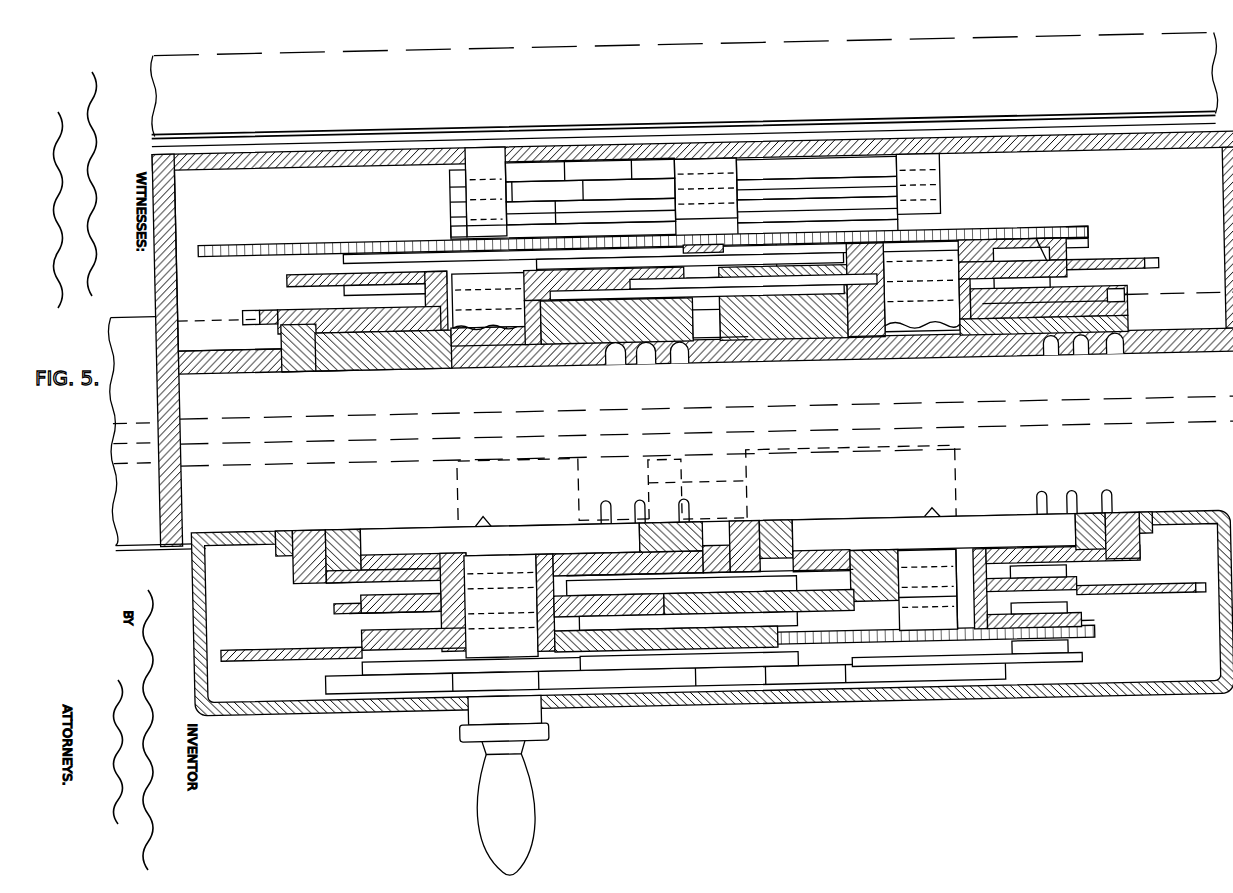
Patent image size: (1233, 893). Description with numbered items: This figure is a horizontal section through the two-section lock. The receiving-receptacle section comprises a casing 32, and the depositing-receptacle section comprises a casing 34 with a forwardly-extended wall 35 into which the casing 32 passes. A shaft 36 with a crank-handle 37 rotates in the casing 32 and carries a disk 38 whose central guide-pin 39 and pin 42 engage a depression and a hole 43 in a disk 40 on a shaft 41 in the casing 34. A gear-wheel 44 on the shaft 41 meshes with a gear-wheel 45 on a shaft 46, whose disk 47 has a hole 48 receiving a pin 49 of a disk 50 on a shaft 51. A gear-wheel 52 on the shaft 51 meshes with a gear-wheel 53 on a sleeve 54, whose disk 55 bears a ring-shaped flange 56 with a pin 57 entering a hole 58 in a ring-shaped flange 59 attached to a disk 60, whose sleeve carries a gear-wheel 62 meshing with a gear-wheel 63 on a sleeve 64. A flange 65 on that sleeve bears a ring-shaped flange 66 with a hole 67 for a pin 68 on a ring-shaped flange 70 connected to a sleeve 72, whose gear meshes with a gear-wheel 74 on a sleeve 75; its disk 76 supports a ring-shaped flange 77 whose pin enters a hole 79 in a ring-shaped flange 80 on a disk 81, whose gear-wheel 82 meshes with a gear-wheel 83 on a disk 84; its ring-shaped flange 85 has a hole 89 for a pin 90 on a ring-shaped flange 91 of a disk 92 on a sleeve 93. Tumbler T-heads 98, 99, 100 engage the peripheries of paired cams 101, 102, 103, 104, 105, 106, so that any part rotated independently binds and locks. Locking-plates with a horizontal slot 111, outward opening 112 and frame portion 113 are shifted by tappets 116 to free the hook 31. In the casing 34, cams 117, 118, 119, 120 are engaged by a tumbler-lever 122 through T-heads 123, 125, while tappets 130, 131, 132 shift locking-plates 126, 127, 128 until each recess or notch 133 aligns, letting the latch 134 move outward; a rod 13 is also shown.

The rod 13 is at (1174, 603).
The hook 31 is at (745, 502).
The casing 32 is at (369, 705).
The casing 34 is at (180, 195).
The forwardly-extended wall 35 is at (158, 480).
The shaft 36 is at (501, 606).
The crank-handle 37 is at (513, 769).
The disk 38 is at (544, 522).
The guide-pin 39 is at (480, 513).
The disk 40 is at (529, 363).
The shaft 41 is at (488, 238).
The pin 42 is at (605, 506).
The hole 43 is at (619, 363).
The gear-wheel 44 is at (360, 235).
The gear-wheel 45 is at (1082, 235).
The shaft 46 is at (920, 242).
The disk 47 is at (1002, 363).
The hole 48 is at (1052, 363).
The pin 49 is at (1038, 504).
The disk 50 is at (986, 531).
The shaft 51 is at (928, 588).
The gear-wheel 52 is at (1091, 643).
The gear-wheel 53 is at (278, 640).
The sleeve 54 is at (461, 565).
The disk 55 is at (403, 548).
The ring-shaped flange 56 is at (338, 528).
The pin 57 is at (640, 505).
The hole 58 is at (655, 363).
The ring-shaped flange 59 is at (348, 363).
The disk 60 is at (423, 363).
The gear-wheel 62 is at (290, 272).
The gear-wheel 63 is at (1154, 267).
The sleeve 64 is at (962, 314).
The flange 65 is at (851, 363).
The ring-shaped flange 66 is at (760, 363).
The hole 67 is at (1097, 374).
The pin 68 is at (1076, 501).
The ring-shaped flange 70 is at (757, 525).
The sleeve 72 is at (896, 602).
The gear-wheel 74 is at (338, 613).
The sleeve 75 is at (357, 630).
The disk 76 is at (343, 575).
The ring-shaped flange 77 is at (306, 528).
The hole 79 is at (690, 363).
The ring-shaped flange 80 is at (308, 363).
The disk 81 is at (393, 363).
The gear-wheel 82 is at (250, 301).
The gear-wheel 83 is at (1129, 303).
The disk 84 is at (1094, 303).
The ring-shaped flange 85 is at (730, 363).
The hole 89 is at (1120, 363).
The pin 90 is at (1113, 507).
The ring-shaped flange 91 is at (1137, 562).
The disk 92 is at (1090, 572).
The sleeve 93 is at (975, 602).
The T-head 98 is at (709, 582).
The T-head 99 is at (688, 621).
The T-head 100 is at (689, 658).
The cam 101 is at (328, 599).
The cam 102 is at (1092, 602).
The cam 103 is at (333, 659).
The cam 104 is at (1082, 634).
The cam 105 is at (616, 665).
The cam 106 is at (1079, 668).
The horizontal slot 111 is at (697, 489).
The outward opening 112 is at (577, 469).
The frame portion 113 is at (953, 588).
The tappet 116 is at (1039, 606).
The cam 117 is at (400, 246).
The cam 118 is at (1055, 261).
The cam 119 is at (347, 285).
The cam 120 is at (1100, 271).
The tumbler-lever 122 is at (705, 244).
The T-head 123 is at (662, 258).
The T-head 125 is at (780, 262).
The locking-plate 126 is at (817, 193).
The locking-plate 127 is at (817, 184).
The locking-plate 128 is at (817, 206).
The tappet 130 is at (1005, 243).
The tappet 131 is at (1042, 246).
The tappet 132 is at (1044, 303).
The recess or notch 133 is at (562, 198).
The latch 134 is at (705, 188).